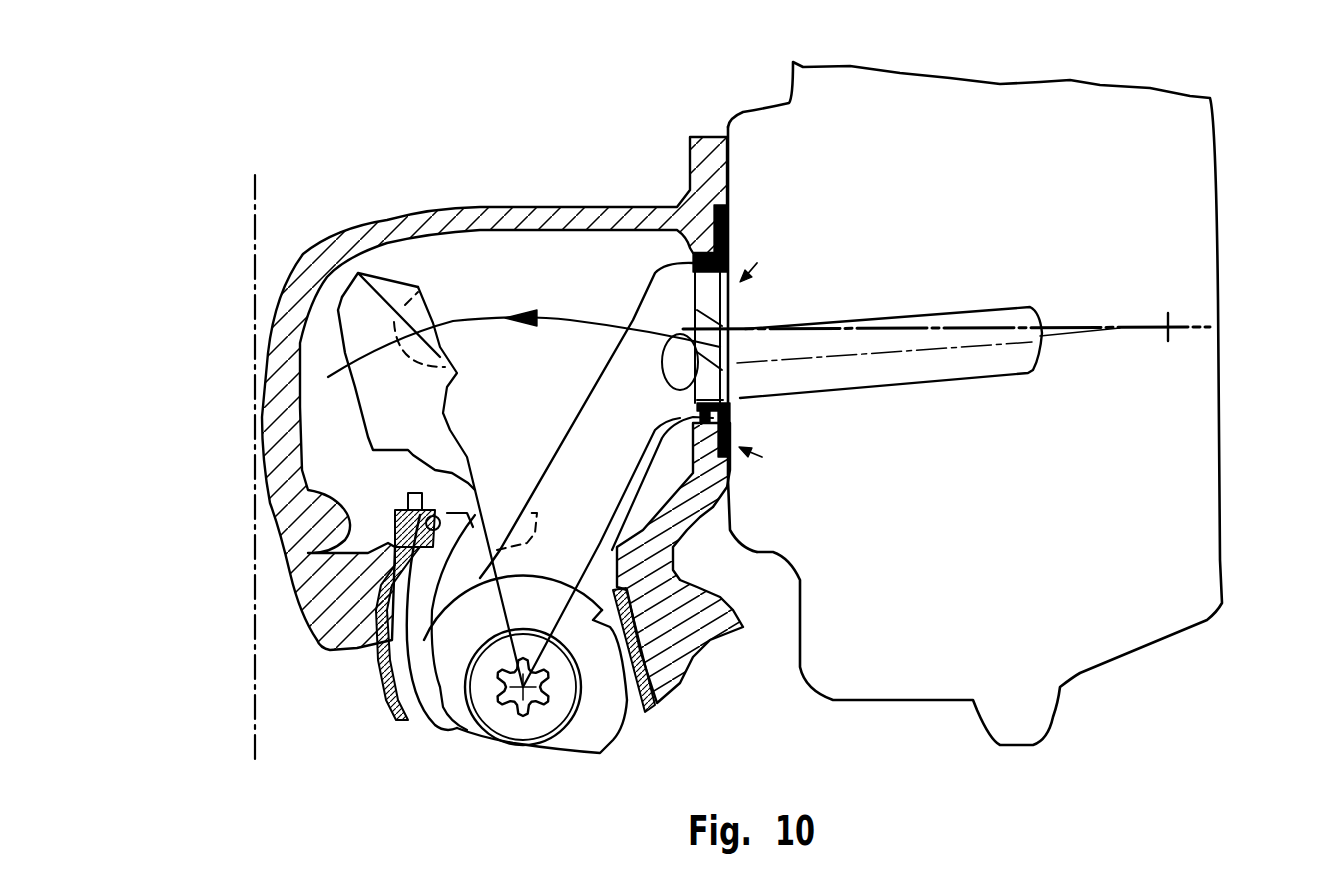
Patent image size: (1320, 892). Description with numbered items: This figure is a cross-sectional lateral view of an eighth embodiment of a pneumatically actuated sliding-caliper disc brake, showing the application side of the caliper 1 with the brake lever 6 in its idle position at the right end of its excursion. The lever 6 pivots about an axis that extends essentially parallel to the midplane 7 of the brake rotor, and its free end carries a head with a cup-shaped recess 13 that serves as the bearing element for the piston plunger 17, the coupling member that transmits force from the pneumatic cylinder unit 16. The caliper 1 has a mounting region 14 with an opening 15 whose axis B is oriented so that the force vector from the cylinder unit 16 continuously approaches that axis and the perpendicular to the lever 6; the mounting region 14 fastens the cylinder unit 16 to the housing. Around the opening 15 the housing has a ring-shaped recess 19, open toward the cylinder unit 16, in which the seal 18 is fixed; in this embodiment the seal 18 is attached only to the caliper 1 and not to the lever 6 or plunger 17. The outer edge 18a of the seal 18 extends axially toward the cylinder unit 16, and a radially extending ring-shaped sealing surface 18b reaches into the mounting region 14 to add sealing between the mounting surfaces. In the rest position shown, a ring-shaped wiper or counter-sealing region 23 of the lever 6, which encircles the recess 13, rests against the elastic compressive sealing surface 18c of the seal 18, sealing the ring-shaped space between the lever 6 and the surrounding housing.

The caliper 1 is at (305, 265).
The lever 6 is at (343, 295).
The midplane 7 is at (250, 213).
The recess 13 is at (424, 312).
The mounting region 14 is at (730, 235).
The opening 15 is at (750, 272).
The pneumatic cylinder unit 16 is at (1162, 135).
The piston plunger 17 is at (963, 318).
The seal 18 is at (762, 457).
The outer edge 18a is at (745, 425).
The ring-shaped sealing surface 18b is at (740, 458).
The compressive sealing surface 18c is at (693, 490).
The ring-shaped recess 19 is at (688, 194).
The counter-sealing region 23 is at (362, 310).
The axis of opening B is at (1073, 325).